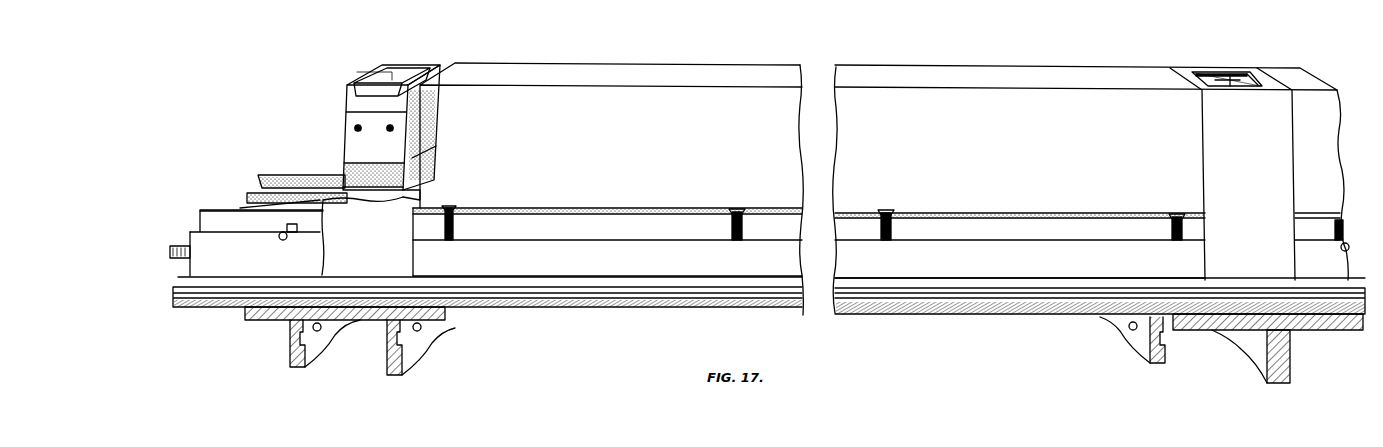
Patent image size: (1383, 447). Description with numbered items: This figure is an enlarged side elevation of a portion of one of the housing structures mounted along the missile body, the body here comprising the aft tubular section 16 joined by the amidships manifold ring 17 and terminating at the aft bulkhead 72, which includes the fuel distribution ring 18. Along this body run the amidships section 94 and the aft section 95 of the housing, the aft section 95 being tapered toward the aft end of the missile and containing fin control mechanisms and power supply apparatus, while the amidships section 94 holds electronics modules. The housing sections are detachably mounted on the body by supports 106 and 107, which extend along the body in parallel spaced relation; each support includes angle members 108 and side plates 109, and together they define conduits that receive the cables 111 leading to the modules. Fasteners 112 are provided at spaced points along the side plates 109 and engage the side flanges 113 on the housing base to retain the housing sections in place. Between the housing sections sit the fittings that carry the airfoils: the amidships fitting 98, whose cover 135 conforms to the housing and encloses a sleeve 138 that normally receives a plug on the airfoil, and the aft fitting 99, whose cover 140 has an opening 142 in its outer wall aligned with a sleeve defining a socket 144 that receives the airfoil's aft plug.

The aft tubular section 16 is at (741, 313).
The amidships manifold ring 17 is at (414, 345).
The fuel distribution ring 18 is at (1140, 340).
The aft bulkhead 72 is at (1287, 358).
The amidships section 94 is at (931, 74).
The aft section 95 is at (1331, 149).
The amidships fitting 98 is at (378, 49).
The aft fitting 99 is at (1229, 53).
The support 106 is at (293, 160).
The support 107 is at (211, 198).
The angle member 108 is at (262, 178).
The side plate 109 is at (201, 263).
The cable 111 is at (256, 195).
The fastener 112 is at (278, 238).
The side flange 113 is at (556, 228).
The cover 135 is at (333, 243).
The sleeve 138 is at (408, 72).
The cover 140 is at (1222, 176).
The opening 142 is at (1207, 73).
The socket 144 is at (1241, 73).